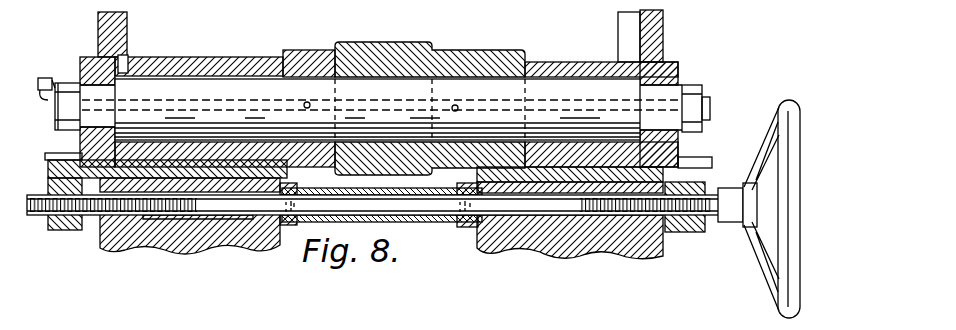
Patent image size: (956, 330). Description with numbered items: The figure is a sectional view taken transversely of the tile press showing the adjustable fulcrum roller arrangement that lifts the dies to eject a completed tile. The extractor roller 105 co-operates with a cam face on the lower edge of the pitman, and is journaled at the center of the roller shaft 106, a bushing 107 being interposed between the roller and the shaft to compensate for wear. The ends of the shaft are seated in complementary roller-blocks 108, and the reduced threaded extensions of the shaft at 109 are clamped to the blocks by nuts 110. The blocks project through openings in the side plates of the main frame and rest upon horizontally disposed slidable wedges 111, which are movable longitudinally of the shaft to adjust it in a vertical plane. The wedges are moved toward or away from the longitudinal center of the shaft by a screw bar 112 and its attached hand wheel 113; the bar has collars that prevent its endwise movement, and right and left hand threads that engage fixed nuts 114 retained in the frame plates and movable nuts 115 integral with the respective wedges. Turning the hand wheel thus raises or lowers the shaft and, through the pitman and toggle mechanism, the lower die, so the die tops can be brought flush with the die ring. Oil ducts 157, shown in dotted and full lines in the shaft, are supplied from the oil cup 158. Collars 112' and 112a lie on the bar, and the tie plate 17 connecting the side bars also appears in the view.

The tie plate 17 is at (490, 262).
The extractor roller 105 is at (428, 43).
The roller shaft 106 is at (540, 88).
The bushing 107 is at (307, 53).
The roller-blocks 108 is at (160, 62).
The reduced threaded extensions of the shaft 109 is at (710, 101).
The nuts 110 is at (70, 82).
The slidable wedges 111 is at (163, 247).
The screw bar 112 is at (190, 231).
The collar 112' is at (408, 243).
The collar 112a is at (428, 222).
The hand wheel 113 is at (788, 123).
The fixed nuts 114 is at (607, 252).
The movable nuts 115 is at (67, 232).
The oil ducts 157 is at (381, 109).
The oil cup 158 is at (55, 68).